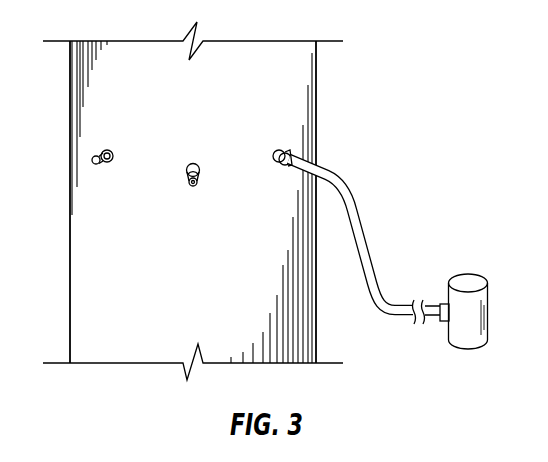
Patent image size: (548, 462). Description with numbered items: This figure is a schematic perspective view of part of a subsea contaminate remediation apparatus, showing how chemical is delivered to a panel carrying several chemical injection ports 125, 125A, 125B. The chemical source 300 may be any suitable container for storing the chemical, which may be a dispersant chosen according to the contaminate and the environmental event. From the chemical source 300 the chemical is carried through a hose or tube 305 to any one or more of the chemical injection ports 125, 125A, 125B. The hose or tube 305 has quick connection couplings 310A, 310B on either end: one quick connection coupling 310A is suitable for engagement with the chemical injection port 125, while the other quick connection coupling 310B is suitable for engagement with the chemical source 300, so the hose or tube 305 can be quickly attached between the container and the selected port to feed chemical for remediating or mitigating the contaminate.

The chemical injection port 125 is at (277, 150).
The chemical injection port 125A is at (191, 164).
The chemical injection port 125B is at (110, 150).
The chemical source 300 is at (467, 282).
The hose or tube 305 is at (359, 222).
The quick connection coupling 310A is at (281, 166).
The quick connection coupling 310B is at (441, 323).